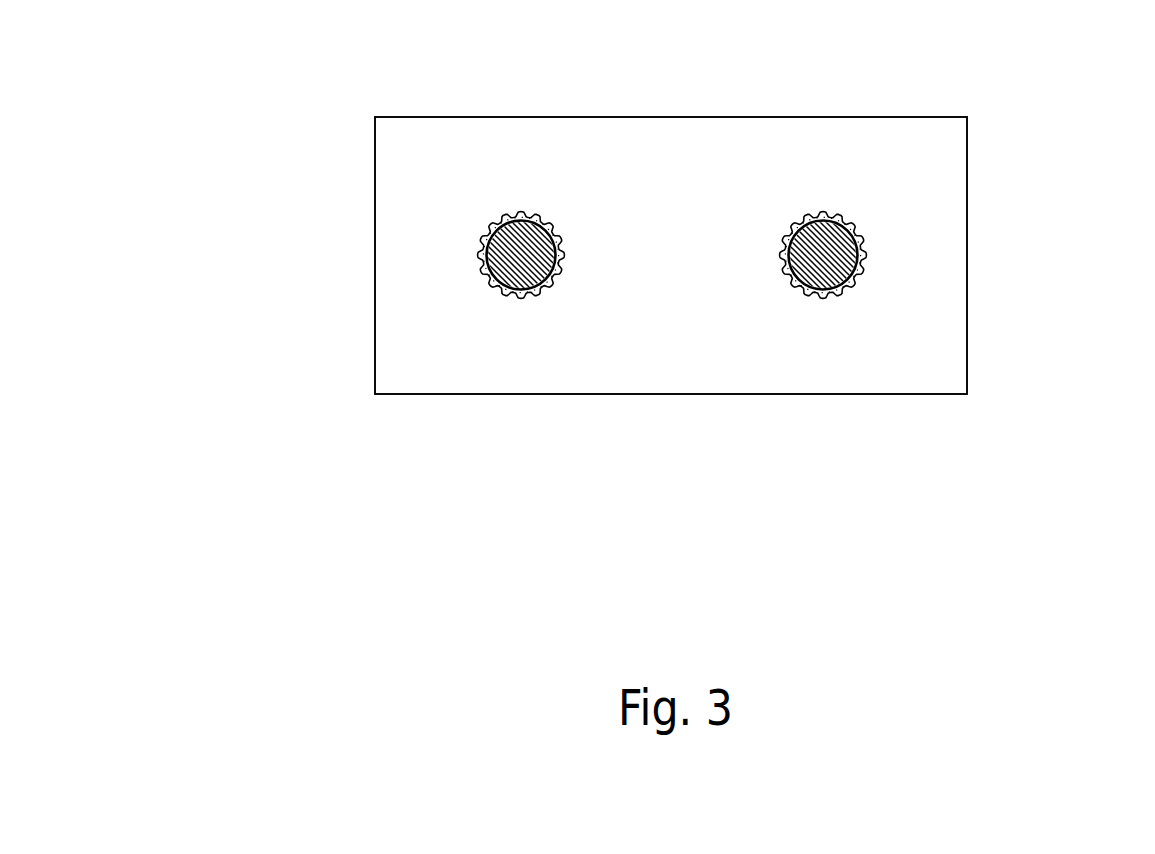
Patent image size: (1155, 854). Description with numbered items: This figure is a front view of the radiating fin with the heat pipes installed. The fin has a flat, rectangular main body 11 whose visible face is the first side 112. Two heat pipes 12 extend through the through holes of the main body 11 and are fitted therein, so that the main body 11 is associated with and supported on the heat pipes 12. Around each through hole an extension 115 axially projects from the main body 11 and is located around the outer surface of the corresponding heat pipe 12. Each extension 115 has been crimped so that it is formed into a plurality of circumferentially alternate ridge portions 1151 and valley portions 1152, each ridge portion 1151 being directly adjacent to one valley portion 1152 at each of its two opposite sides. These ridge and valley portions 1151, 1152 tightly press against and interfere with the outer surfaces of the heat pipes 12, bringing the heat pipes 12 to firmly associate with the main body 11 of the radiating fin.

The main body 11 is at (753, 217).
The first side 112 is at (928, 368).
The extension 115 is at (385, 250).
The ridge portion 1151 is at (481, 237).
The valley portion 1152 is at (486, 249).
The heat pipe 12 is at (826, 262).